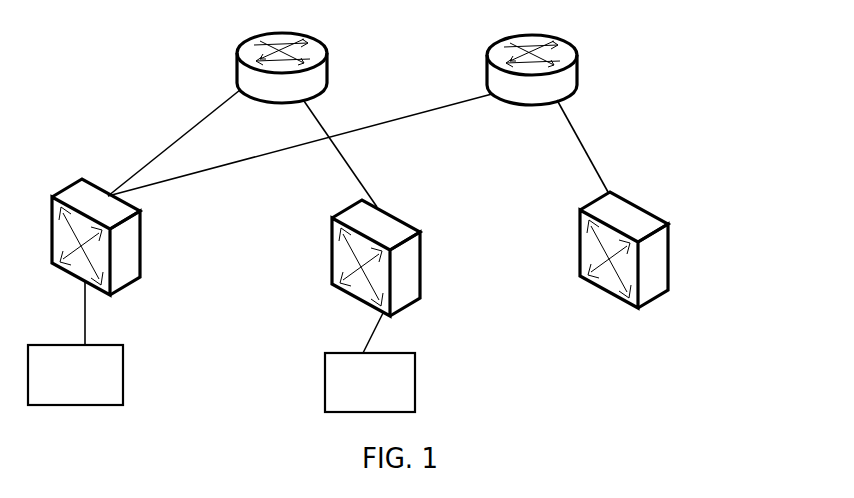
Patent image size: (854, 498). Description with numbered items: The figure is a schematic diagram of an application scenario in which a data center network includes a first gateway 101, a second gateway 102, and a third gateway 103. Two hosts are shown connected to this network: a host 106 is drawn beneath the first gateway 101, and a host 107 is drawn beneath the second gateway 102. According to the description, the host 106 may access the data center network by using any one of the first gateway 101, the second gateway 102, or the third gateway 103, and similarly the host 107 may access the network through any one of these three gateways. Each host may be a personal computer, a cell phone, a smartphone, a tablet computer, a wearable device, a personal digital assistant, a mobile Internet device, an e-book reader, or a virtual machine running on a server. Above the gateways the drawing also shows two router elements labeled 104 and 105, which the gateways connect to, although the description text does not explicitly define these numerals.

The first gateway 101 is at (138, 213).
The second gateway 102 is at (447, 213).
The third gateway 103 is at (695, 208).
The router 104 is at (327, 58).
The router 105 is at (577, 58).
The host 106 is at (123, 360).
The host 107 is at (415, 365).